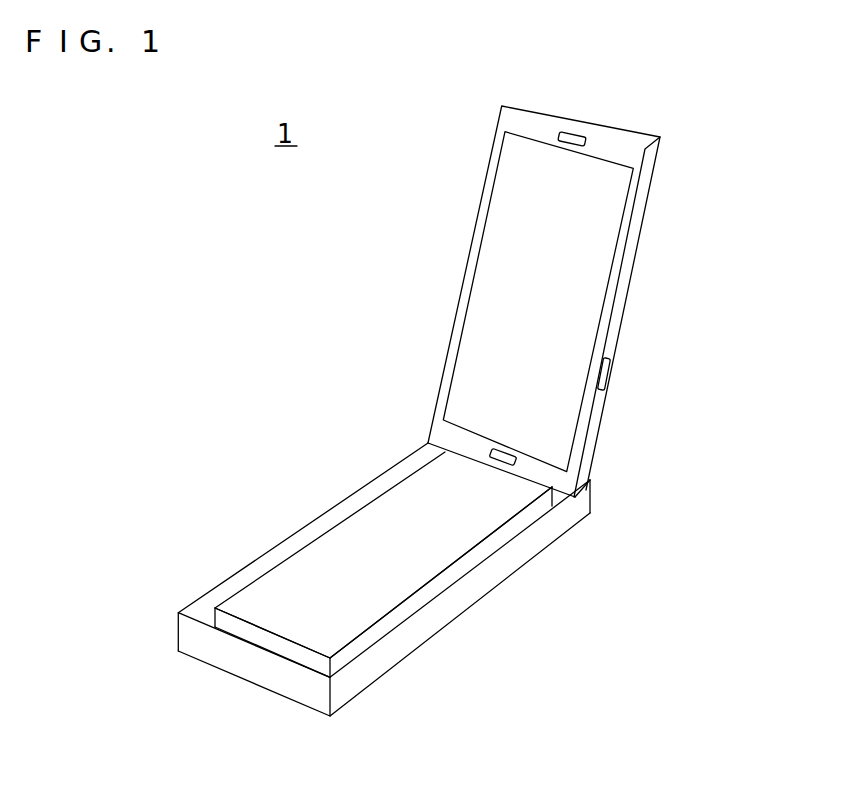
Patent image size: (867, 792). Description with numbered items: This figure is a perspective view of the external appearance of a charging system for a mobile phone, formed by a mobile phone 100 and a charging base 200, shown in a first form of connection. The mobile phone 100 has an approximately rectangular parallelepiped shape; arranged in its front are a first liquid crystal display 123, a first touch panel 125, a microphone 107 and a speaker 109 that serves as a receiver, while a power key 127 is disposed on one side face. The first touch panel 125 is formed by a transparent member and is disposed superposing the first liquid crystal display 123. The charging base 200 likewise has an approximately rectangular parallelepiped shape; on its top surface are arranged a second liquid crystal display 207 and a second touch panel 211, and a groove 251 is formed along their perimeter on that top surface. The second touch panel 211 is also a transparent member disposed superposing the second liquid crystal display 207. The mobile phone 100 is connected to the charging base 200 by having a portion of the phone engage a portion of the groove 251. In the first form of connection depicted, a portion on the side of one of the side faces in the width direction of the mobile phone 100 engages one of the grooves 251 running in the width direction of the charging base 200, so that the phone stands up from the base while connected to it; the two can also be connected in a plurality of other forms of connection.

The mobile phone 100 is at (628, 132).
The speaker 109 is at (570, 133).
The first touch panel 125 is at (508, 212).
The first liquid crystal display 123 is at (598, 228).
The power key 127 is at (607, 370).
The microphone 107 is at (504, 455).
The charging base 200 is at (388, 653).
The second touch panel 211 is at (376, 512).
The second liquid crystal display 207 is at (443, 538).
The groove 251 is at (293, 538).